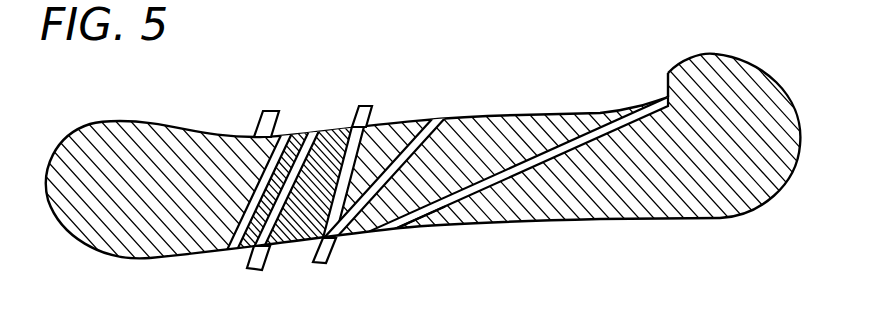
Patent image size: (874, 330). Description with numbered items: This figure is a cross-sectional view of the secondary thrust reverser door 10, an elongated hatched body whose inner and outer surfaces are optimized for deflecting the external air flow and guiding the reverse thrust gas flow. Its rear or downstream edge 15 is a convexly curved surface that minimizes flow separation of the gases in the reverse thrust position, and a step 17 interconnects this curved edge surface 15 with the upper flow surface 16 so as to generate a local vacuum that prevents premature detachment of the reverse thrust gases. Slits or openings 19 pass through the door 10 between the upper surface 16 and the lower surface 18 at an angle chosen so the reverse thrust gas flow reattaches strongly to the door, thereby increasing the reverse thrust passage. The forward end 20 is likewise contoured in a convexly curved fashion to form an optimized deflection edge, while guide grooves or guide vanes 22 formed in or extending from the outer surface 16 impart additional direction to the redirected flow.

The secondary thrust reverser door 10 is at (221, 107).
The rear or downstream edge 15 is at (773, 203).
The upper flow surface 16 is at (516, 114).
The step 17 is at (667, 84).
The lower surface 18 is at (607, 222).
The slits or openings 19 is at (440, 214).
The forward end 20 is at (52, 205).
The guide grooves or guide vanes 22 is at (368, 108).